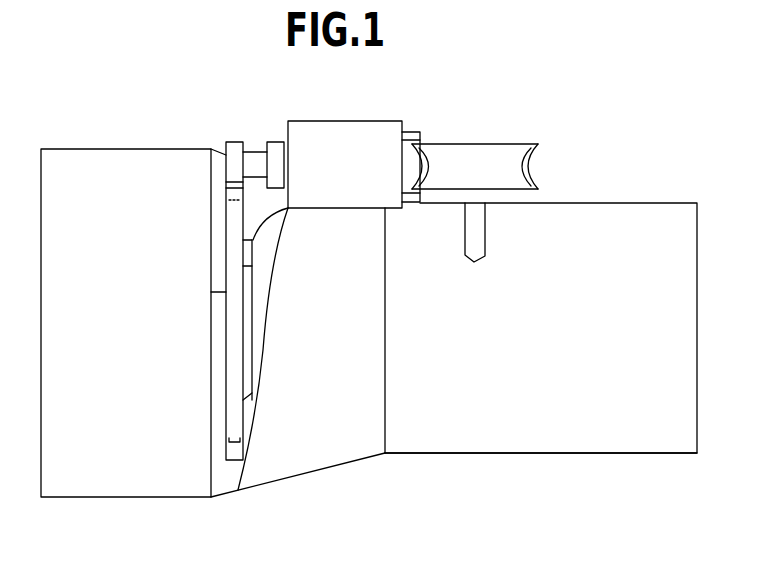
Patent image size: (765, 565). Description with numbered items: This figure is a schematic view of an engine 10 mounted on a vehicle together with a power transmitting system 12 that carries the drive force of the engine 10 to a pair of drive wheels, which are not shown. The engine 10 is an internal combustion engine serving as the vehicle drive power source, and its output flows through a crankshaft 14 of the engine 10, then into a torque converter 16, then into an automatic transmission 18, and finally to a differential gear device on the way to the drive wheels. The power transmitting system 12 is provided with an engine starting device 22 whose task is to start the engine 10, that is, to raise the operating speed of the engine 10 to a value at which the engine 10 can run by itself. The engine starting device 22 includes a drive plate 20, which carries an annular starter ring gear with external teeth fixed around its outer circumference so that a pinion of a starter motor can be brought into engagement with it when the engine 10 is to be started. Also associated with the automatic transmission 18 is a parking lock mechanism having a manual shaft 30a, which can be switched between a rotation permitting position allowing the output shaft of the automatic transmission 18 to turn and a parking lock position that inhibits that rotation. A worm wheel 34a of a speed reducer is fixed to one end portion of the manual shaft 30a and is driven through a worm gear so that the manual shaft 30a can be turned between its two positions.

The engine 10 is at (108, 158).
The power transmitting system 12 is at (604, 182).
The crankshaft 14 is at (219, 345).
The torque converter 16 is at (306, 460).
The automatic transmission 18 is at (510, 442).
The drive plate 20 is at (219, 412).
The engine starting device 22 is at (345, 114).
The manual shaft 30a is at (476, 229).
The worm wheel 34a is at (478, 152).